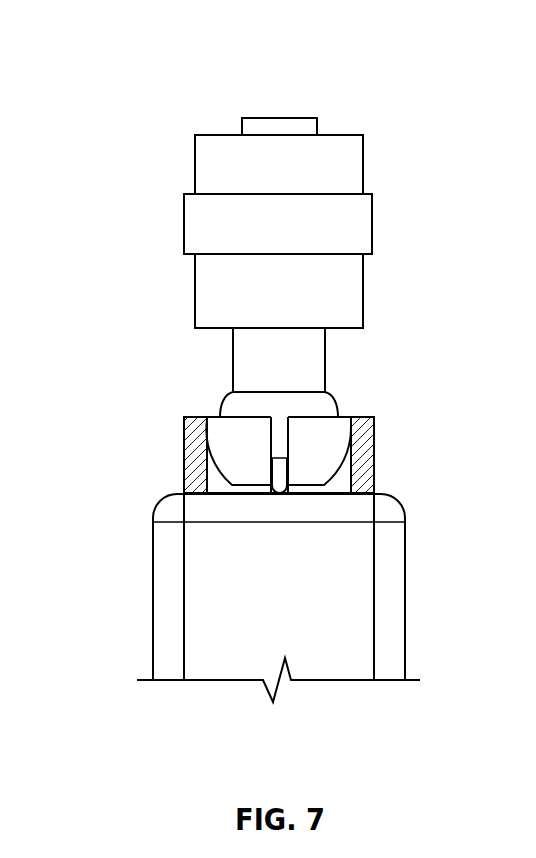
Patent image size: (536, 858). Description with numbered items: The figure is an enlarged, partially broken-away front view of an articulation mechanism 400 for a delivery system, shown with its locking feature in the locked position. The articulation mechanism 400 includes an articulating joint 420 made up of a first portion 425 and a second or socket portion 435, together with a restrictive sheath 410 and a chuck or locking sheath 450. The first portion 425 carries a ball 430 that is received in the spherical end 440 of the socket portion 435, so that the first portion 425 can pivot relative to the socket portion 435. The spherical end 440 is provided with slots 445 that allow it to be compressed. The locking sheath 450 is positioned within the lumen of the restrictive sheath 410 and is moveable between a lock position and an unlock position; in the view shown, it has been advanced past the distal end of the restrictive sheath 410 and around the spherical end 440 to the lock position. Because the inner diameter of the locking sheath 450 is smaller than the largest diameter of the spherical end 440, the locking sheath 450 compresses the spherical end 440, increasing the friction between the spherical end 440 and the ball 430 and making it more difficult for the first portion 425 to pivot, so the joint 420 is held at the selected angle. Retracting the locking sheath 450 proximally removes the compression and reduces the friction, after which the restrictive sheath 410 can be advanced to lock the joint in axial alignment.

The articulation mechanism 400 is at (145, 55).
The restrictive sheath 410 is at (405, 610).
The articulating joint 420 is at (375, 358).
The first portion 425 is at (142, 214).
The ball 430 is at (228, 402).
The socket portion 435 is at (124, 570).
The spherical end 440 is at (238, 450).
The slots 445 is at (281, 477).
The locking sheath 450 is at (363, 453).